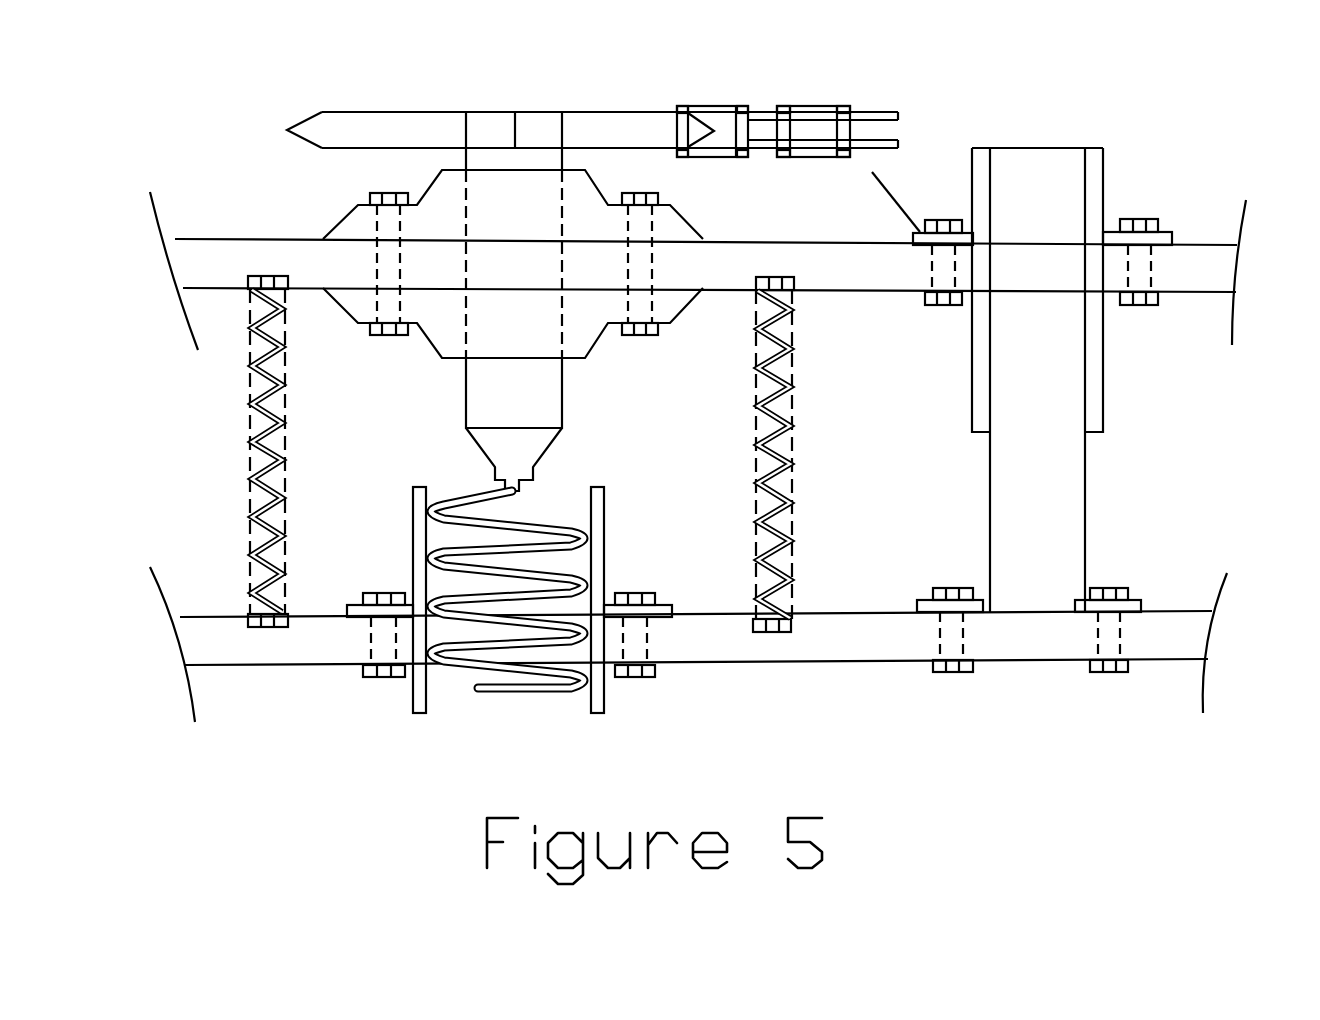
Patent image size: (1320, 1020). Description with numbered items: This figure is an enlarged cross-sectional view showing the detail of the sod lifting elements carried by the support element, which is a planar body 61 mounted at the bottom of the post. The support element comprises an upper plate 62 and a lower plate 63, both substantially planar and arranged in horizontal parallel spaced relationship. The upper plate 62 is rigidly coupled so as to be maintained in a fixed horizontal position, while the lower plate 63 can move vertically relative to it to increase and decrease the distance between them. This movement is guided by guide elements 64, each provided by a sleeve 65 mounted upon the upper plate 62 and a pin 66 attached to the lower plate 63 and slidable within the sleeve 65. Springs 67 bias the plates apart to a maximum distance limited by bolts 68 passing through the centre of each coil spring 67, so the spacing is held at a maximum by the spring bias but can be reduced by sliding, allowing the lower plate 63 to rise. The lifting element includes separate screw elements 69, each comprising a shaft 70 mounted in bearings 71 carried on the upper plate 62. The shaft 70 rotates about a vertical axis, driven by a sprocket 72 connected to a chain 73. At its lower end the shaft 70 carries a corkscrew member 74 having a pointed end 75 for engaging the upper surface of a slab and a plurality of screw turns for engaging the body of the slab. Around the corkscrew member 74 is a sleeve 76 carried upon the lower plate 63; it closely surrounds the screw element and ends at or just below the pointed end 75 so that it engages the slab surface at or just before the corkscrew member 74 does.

The planar body 61 is at (927, 190).
The upper plate 62 is at (888, 266).
The lower plate 63 is at (877, 635).
The guide elements 64 is at (1118, 470).
The sleeve 65 is at (1105, 355).
The pin 66 is at (1050, 556).
The springs 67 is at (238, 472).
The bolts 68 is at (775, 277).
The screw elements 69 is at (510, 88).
The shaft 70 is at (512, 400).
The bearings 71 is at (448, 318).
The sprocket 72 is at (395, 130).
The chain 73 is at (745, 105).
The corkscrew member 74 is at (565, 681).
The pointed end 75 is at (505, 749).
The sleeve 76 is at (410, 700).